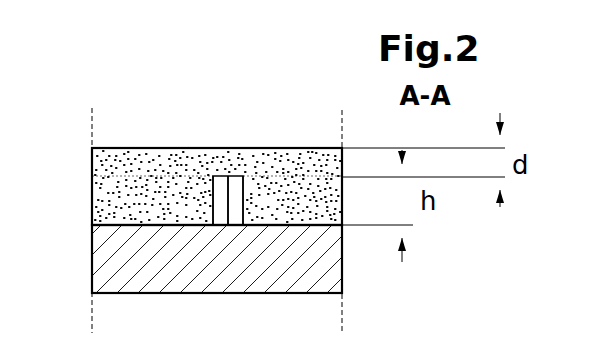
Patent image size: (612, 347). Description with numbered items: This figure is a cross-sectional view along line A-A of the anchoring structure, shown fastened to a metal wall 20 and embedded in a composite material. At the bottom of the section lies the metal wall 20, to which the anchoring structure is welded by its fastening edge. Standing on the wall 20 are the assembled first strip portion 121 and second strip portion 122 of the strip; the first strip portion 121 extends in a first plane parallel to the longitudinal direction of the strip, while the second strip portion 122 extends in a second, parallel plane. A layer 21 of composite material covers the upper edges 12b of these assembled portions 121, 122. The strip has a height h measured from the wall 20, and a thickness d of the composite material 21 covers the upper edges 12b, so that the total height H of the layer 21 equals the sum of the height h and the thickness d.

The upper edge 12b is at (218, 176).
The metal wall 20 is at (113, 260).
The layer of composite material 21 is at (269, 158).
The first strip portion 121 is at (205, 197).
The second strip portion 122 is at (251, 208).